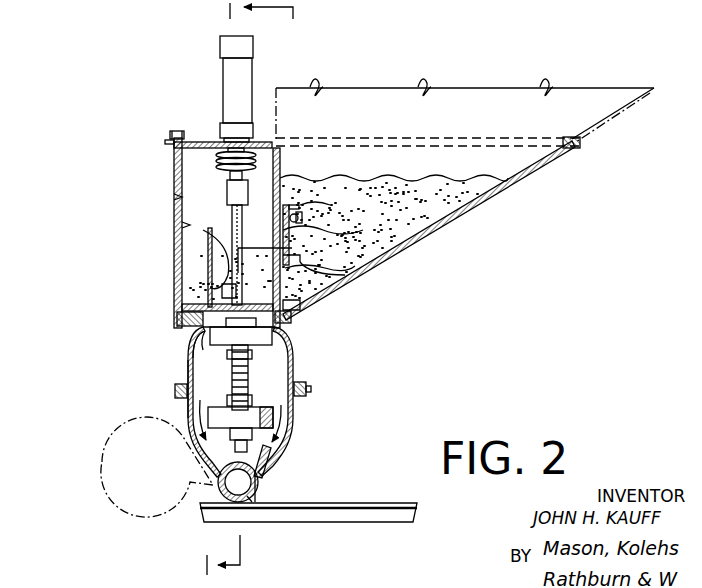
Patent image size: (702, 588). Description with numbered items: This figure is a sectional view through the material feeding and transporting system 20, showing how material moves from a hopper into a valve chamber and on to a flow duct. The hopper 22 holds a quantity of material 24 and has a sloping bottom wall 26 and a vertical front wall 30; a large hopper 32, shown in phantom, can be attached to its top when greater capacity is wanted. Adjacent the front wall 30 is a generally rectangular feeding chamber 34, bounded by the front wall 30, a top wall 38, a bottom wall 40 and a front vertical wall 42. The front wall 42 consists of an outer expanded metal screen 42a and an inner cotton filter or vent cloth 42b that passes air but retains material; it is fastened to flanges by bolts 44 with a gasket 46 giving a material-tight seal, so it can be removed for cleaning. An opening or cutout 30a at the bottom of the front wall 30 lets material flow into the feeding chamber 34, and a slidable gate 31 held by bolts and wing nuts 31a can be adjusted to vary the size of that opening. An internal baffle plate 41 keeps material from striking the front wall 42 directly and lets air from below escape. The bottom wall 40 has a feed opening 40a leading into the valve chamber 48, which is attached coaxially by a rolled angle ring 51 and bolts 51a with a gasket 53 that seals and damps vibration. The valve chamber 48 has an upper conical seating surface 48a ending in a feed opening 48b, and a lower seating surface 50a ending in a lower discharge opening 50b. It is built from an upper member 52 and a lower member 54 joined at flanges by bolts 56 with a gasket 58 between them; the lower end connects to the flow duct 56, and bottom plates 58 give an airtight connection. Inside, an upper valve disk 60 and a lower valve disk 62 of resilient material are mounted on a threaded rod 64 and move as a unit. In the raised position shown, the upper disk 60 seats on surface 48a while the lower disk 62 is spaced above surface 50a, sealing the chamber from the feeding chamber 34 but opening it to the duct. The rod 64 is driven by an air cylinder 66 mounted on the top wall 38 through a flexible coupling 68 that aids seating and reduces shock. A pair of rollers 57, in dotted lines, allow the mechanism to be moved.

The material feeding and transporting system 20 is at (434, 346).
The hopper 22 is at (394, 221).
The material 24 is at (485, 180).
The sloping bottom wall 26 is at (352, 273).
The vertical front wall 30 is at (322, 262).
The opening or cutout 30a is at (292, 208).
The slidable gate 31 is at (300, 250).
The bolts and wing nuts 31a is at (310, 206).
The large hopper 32 is at (628, 112).
The feeding chamber 34 is at (178, 221).
The top wall 38 is at (210, 142).
The bottom wall 40 is at (230, 303).
The feed opening 40a is at (305, 318).
The internal baffle plate 41 is at (208, 232).
The front vertical wall 42 is at (168, 189).
The outer expanded metal screen 42a is at (172, 197).
The inner cotton filter or vent cloth 42b is at (192, 224).
The bolts 44 is at (172, 143).
The gasket 46 is at (180, 136).
The valve chamber 48 is at (298, 426).
The conical seating surface 48a is at (296, 346).
The feed opening 48b is at (222, 290).
The lower seating surface 50a is at (277, 452).
The lower discharge opening 50b is at (262, 474).
The rolled angle ring 51 is at (276, 338).
The bolts 51a is at (285, 330).
The upper member 52 is at (188, 367).
The gasket 53 is at (292, 316).
The lower member 54 is at (186, 418).
The bolts / flow duct 56 is at (306, 386).
The rollers 57 is at (124, 498).
The gasket / bottom plates 58 is at (306, 396).
The upper valve disk 60 is at (206, 344).
The lower valve disk 62 is at (258, 412).
The threaded rod 64 is at (234, 372).
The air cylinder 66 is at (253, 77).
The flexible coupling 68 is at (257, 160).